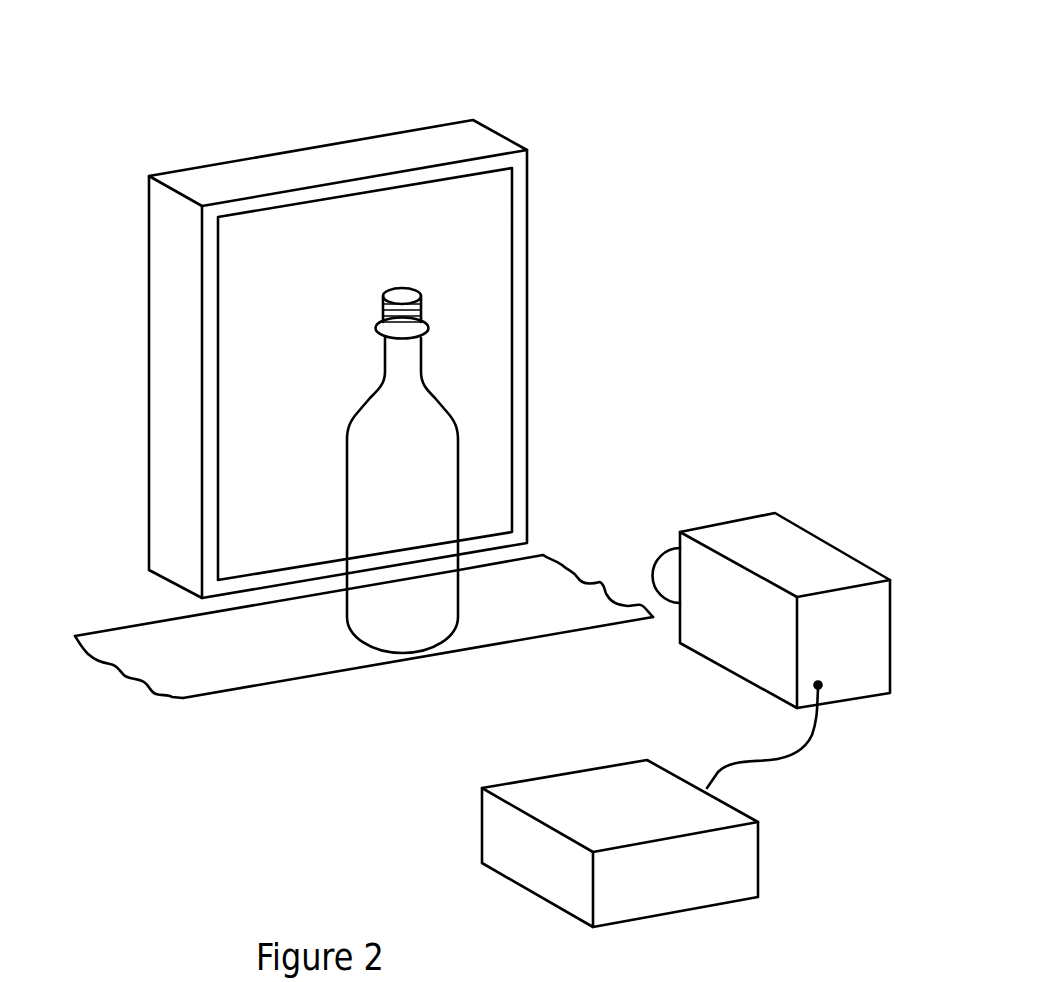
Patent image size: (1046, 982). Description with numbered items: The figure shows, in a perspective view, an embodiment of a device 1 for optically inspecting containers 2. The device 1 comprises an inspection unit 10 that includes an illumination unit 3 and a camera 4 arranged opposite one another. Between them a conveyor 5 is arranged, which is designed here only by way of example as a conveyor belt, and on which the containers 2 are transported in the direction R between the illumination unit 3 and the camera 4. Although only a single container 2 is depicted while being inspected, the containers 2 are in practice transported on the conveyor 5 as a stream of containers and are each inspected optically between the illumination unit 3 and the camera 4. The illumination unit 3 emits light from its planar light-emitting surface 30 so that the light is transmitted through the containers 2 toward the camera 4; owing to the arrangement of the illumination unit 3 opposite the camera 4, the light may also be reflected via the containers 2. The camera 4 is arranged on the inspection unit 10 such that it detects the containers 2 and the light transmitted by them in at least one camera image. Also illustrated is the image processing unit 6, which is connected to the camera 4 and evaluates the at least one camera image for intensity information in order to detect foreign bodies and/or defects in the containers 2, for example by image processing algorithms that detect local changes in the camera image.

The device 1 is at (722, 73).
The inspection unit 10 is at (518, 89).
The container 2 is at (410, 493).
The illumination unit 3 is at (369, 359).
The planar light-emitting surface 30 is at (494, 262).
The camera 4 is at (797, 542).
The conveyor 5 is at (340, 658).
The image processing unit 6 is at (600, 778).
The direction R is at (290, 708).